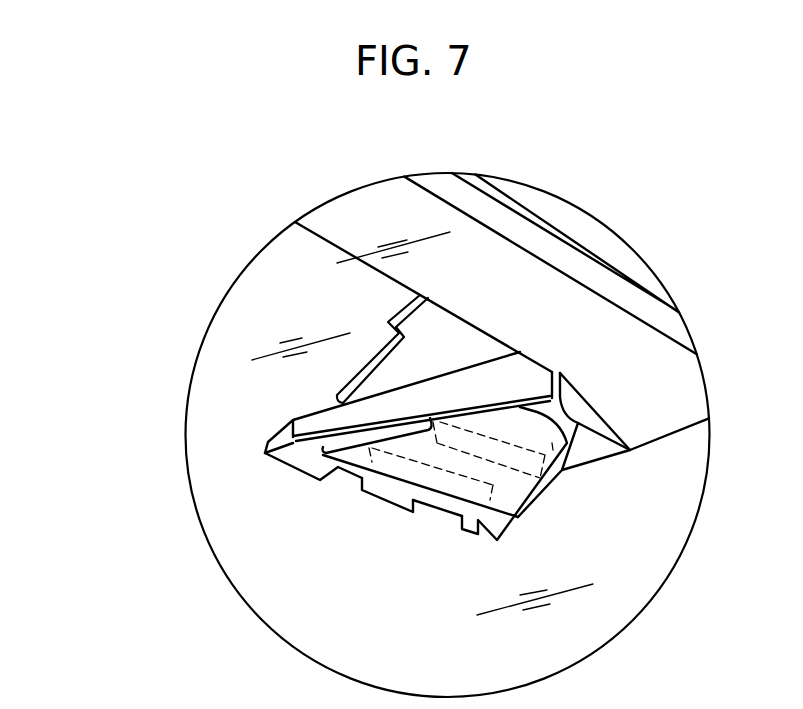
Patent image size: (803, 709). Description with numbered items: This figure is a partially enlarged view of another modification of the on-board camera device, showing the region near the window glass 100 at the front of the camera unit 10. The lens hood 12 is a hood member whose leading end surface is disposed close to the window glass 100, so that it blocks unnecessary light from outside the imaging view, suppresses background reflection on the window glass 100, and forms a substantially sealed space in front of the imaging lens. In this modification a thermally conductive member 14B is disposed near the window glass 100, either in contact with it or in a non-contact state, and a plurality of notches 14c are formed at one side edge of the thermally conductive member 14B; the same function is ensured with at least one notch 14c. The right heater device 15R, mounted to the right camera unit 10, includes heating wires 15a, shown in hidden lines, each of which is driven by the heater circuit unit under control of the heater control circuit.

The window glass 100 is at (250, 316).
The camera unit 10 is at (533, 298).
The lens hood 12 is at (293, 420).
The thermally conductive member 14B is at (297, 458).
The notches 14c is at (445, 512).
The right heater device 15R is at (313, 468).
The heating wires 15a is at (528, 485).